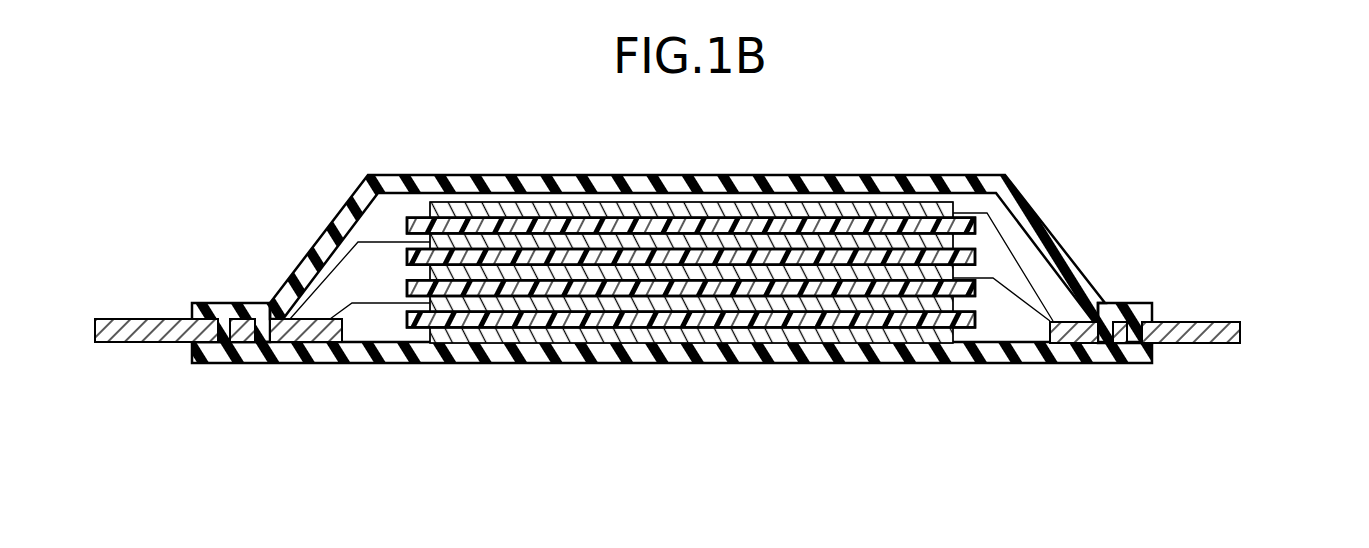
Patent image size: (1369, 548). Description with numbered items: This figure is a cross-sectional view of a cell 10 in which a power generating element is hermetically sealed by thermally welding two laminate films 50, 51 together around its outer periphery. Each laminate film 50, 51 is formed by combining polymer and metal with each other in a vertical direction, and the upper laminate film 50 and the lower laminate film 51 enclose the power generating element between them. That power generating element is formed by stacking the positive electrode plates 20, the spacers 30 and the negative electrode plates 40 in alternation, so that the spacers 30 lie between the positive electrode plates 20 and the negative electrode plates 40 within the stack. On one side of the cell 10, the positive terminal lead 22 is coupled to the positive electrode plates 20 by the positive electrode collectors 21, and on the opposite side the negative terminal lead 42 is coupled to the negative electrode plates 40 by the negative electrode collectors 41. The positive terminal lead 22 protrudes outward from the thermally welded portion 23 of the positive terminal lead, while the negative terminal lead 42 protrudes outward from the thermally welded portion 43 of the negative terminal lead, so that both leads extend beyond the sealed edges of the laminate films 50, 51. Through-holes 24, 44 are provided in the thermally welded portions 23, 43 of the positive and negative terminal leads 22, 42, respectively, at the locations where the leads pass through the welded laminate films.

The cell 10 is at (1033, 142).
The positive electrode plates 20 is at (407, 244).
The positive electrode collectors 21 is at (328, 235).
The positive terminal lead 22 is at (118, 327).
The thermally welded portion of the positive terminal lead 23 is at (218, 308).
The through-hole 24 is at (262, 335).
The spacers 30 is at (512, 320).
The negative electrode plates 40 is at (948, 325).
The negative electrode collectors 41 is at (1000, 226).
The negative terminal lead 42 is at (1200, 326).
The thermally welded portion of the negative terminal lead 43 is at (1117, 306).
The through-hole 44 is at (1131, 337).
The laminate film 50 is at (667, 174).
The laminate film 51 is at (573, 367).